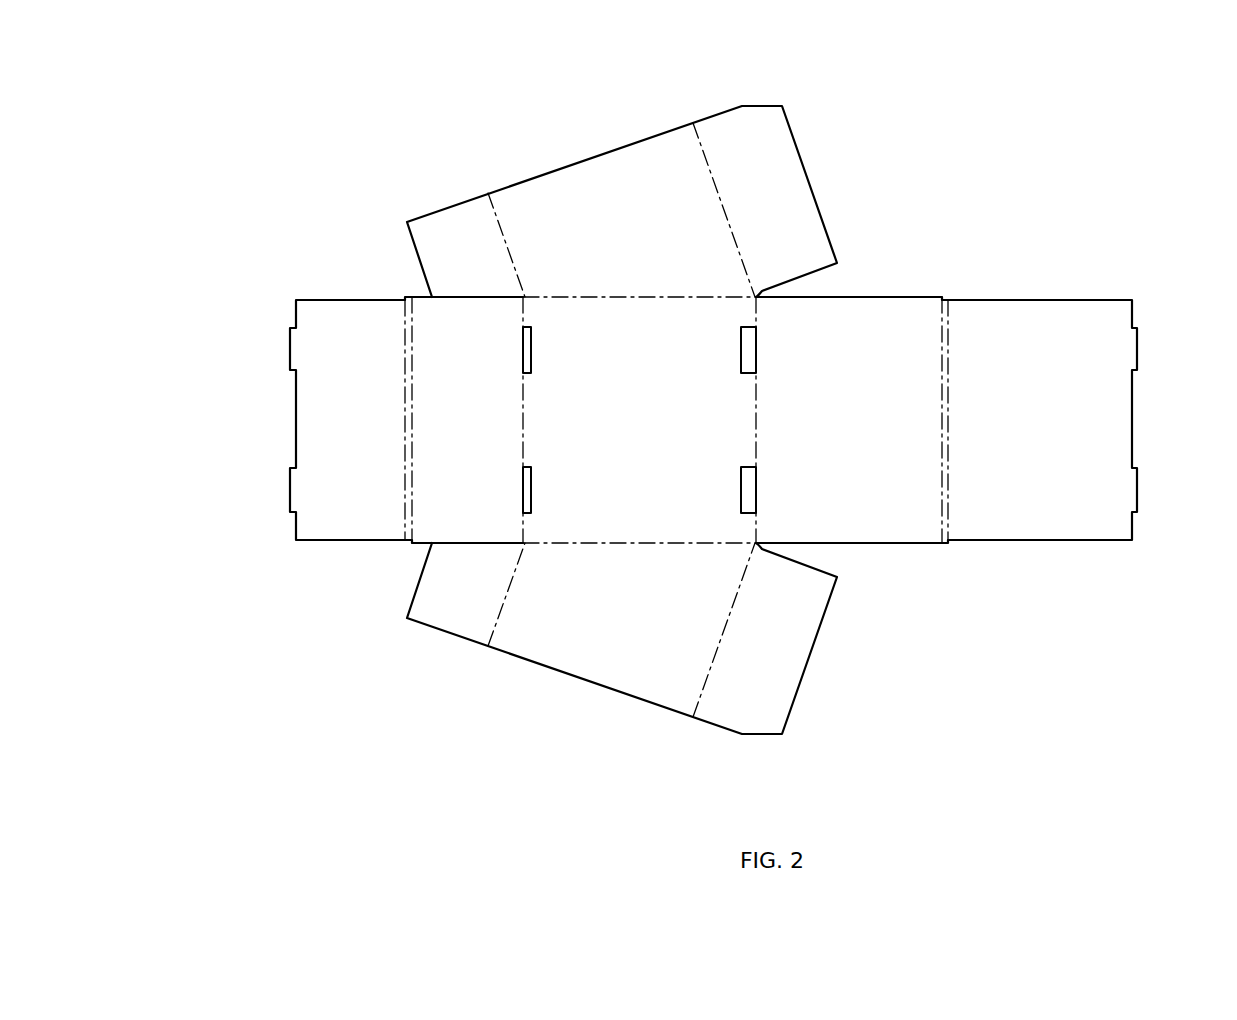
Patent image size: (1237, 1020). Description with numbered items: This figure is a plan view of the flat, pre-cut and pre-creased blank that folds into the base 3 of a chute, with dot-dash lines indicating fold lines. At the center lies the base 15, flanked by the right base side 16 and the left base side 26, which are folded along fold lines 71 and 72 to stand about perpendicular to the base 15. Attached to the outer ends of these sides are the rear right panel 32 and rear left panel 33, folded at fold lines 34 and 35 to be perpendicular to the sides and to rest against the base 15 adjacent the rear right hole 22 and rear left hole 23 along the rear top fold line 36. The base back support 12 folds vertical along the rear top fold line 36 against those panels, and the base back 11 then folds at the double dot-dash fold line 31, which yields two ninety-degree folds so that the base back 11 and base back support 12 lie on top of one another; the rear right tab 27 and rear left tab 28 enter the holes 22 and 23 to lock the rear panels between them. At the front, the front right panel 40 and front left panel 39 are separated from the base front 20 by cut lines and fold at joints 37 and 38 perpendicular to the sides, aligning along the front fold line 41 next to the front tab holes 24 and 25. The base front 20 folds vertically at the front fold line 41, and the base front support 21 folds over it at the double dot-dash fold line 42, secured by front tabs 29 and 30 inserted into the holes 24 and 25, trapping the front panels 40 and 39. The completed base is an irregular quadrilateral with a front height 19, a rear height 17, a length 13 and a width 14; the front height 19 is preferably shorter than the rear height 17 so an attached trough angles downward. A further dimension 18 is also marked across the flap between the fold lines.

The base 3 is at (225, 167).
The base back 11 is at (948, 423).
The base back support 12 is at (942, 383).
The length 13 is at (741, 348).
The width 14 is at (594, 297).
The base 15 is at (693, 455).
The right base side 16 is at (557, 190).
The rear height 17 is at (698, 215).
The length between fold lines 18 is at (609, 207).
The front height 19 is at (472, 253).
The base front 20 is at (523, 420).
The base front support 21 is at (296, 448).
The rear right hole 22 is at (1222, 734).
The rear left hole 23 is at (750, 495).
The front tab hole 24 is at (522, 358).
The front tab hole 25 is at (408, 543).
The left base side 26 is at (528, 637).
The rear right tab 27 is at (1137, 357).
The rear left tab 28 is at (1137, 490).
The front tab 29 is at (290, 345).
The front tab 30 is at (290, 482).
The fold line 31 is at (946, 297).
The rear right panel 32 is at (780, 178).
The rear left panel 33 is at (760, 720).
The fold line 34 is at (695, 122).
The fold line 35 is at (705, 680).
The rear top fold line 36 is at (757, 422).
The joint 37 is at (487, 192).
The joint 38 is at (493, 623).
The front left panel 39 is at (435, 607).
The front right panel 40 is at (418, 232).
The front fold line 41 is at (522, 445).
The fold line 42 is at (522, 507).
The fold line 71 is at (652, 297).
The fold line 72 is at (620, 543).